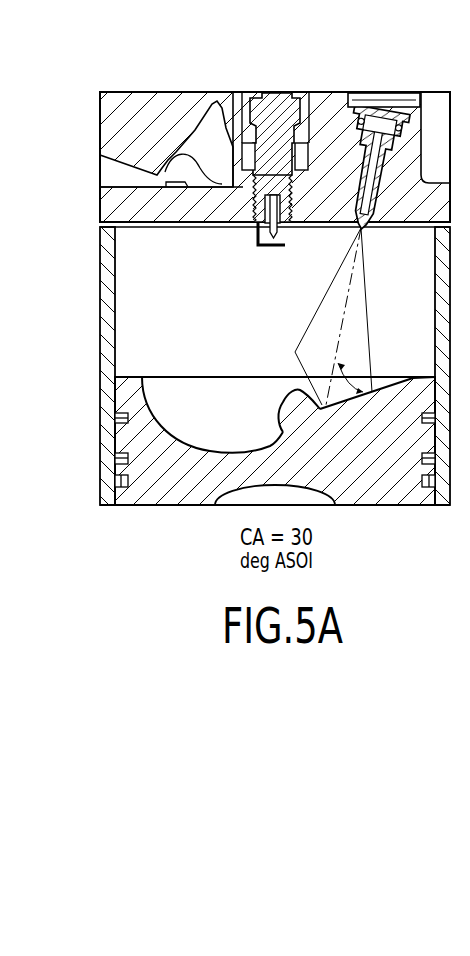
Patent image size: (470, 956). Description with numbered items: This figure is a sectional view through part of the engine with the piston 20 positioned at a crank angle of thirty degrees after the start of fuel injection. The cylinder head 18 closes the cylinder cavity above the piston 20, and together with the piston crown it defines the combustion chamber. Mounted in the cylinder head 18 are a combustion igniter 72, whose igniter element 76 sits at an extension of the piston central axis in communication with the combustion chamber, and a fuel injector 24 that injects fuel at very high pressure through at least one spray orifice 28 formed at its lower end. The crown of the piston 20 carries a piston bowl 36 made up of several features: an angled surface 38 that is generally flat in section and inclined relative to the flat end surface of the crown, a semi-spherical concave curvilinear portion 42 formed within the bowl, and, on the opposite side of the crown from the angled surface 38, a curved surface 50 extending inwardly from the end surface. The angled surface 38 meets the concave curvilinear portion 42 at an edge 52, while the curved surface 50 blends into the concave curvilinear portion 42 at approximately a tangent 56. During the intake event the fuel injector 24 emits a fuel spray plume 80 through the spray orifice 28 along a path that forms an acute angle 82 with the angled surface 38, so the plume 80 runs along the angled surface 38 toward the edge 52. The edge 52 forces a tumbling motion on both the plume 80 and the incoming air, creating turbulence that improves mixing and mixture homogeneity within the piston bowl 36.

The cylinder head 18 is at (141, 98).
The combustion igniter 72 is at (273, 97).
The igniter element 76 is at (284, 247).
The fuel injector 24 is at (383, 112).
The piston 20 is at (380, 493).
The piston bowl 36 is at (250, 386).
The concave curvilinear portion 42 is at (208, 444).
The curved surface 50 is at (165, 413).
The tangent 56 is at (188, 380).
The edge 52 is at (303, 400).
The angled surface 38 is at (377, 390).
The spray orifice 28 is at (363, 229).
The acute angle 82 is at (350, 374).
The fuel spray plume 80 is at (331, 395).